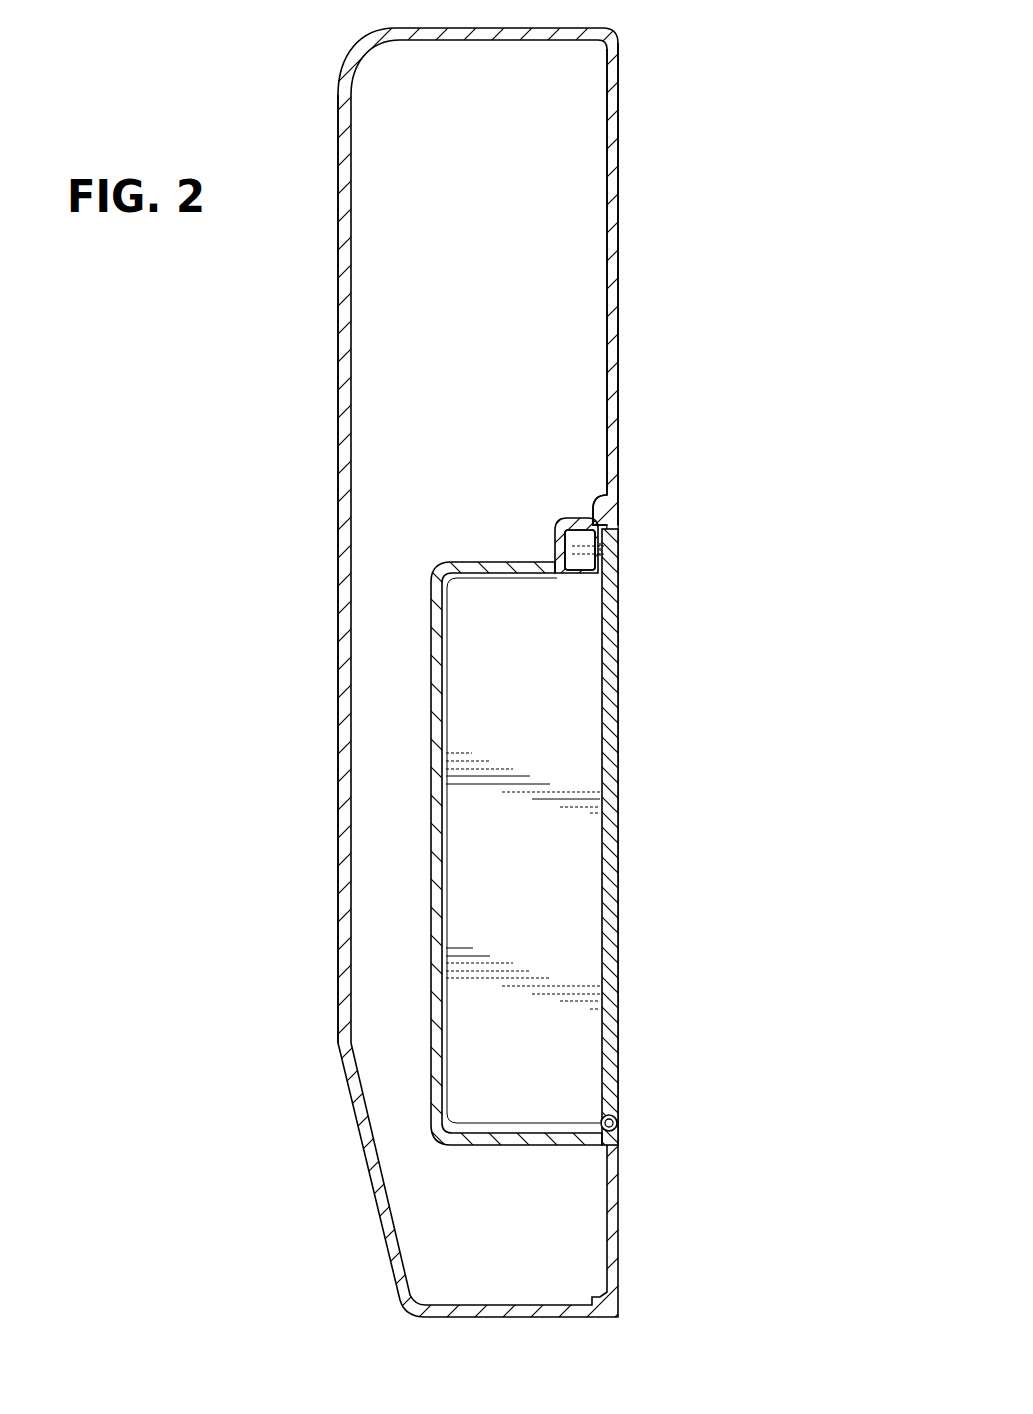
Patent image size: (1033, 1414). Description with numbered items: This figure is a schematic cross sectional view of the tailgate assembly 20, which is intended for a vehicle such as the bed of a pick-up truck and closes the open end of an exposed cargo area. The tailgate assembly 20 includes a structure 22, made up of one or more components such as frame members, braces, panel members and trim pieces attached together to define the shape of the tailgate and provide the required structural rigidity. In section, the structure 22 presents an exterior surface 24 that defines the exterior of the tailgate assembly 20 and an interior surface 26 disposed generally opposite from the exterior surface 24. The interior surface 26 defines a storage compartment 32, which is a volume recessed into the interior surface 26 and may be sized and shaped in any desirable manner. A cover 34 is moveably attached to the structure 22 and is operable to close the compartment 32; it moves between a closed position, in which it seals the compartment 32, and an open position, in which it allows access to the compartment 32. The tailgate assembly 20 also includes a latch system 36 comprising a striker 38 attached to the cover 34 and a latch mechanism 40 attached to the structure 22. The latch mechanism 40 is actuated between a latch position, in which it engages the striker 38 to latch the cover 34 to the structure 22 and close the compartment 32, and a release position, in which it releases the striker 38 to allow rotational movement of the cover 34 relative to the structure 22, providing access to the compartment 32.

The tailgate assembly 20 is at (718, 82).
The structure 22 is at (619, 191).
The exterior surface 24 is at (345, 336).
The interior surface 26 is at (618, 305).
The storage compartment 32 is at (561, 915).
The cover 34 is at (610, 963).
The latch system 36 is at (578, 574).
The striker 38 is at (582, 515).
The latch mechanism 40 is at (599, 566).